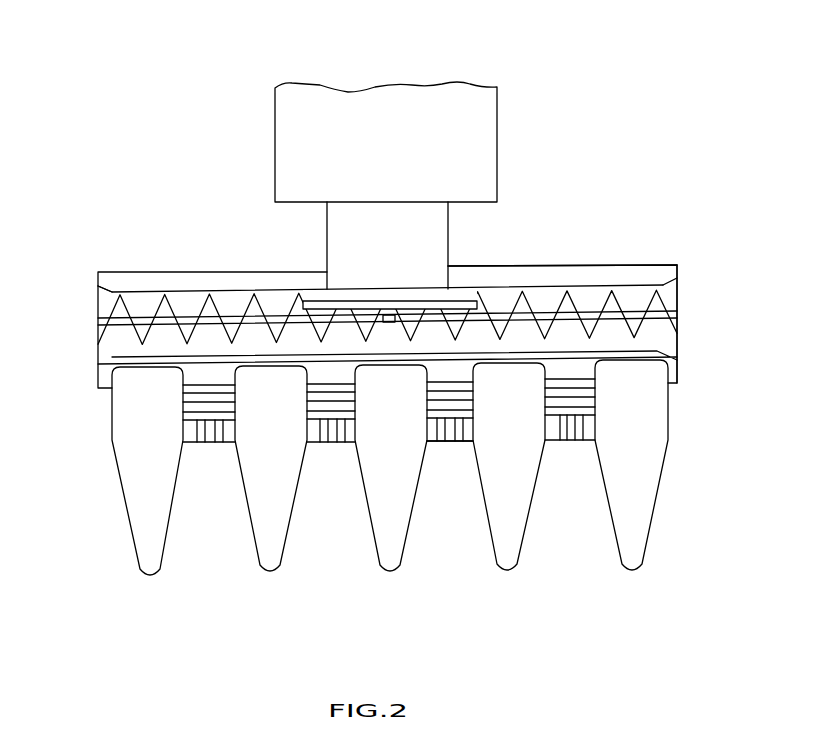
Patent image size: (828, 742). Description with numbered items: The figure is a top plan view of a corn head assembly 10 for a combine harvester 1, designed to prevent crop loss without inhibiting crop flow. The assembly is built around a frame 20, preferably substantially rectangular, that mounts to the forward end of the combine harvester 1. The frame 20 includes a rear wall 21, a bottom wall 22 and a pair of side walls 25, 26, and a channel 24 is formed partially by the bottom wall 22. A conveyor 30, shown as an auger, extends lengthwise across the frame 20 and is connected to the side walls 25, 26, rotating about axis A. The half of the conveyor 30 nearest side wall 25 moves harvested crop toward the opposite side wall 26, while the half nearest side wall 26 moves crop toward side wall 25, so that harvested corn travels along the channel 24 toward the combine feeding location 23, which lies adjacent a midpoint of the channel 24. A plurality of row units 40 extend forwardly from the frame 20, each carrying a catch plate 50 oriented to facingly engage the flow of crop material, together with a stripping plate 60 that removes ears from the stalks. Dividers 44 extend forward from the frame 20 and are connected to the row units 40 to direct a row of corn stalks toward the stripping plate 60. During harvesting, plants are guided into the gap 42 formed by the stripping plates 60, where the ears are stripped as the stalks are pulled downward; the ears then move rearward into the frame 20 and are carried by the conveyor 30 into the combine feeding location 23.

The combine harvester 1 is at (464, 42).
The corn head assembly 10 is at (99, 608).
The frame 20 is at (120, 272).
The rear wall 21 is at (543, 265).
The bottom wall 22 is at (563, 333).
The combine feeding location 23 is at (413, 287).
The channel 24 is at (670, 298).
The side wall 25 is at (98, 288).
The side wall 26 is at (678, 300).
The conveyor 30 is at (183, 318).
The row unit 40 is at (200, 445).
The gap 42 is at (448, 468).
The divider 44 is at (168, 540).
The catch plate 50 is at (192, 407).
The stripping plate 60 is at (219, 445).
The axis A is at (98, 318).